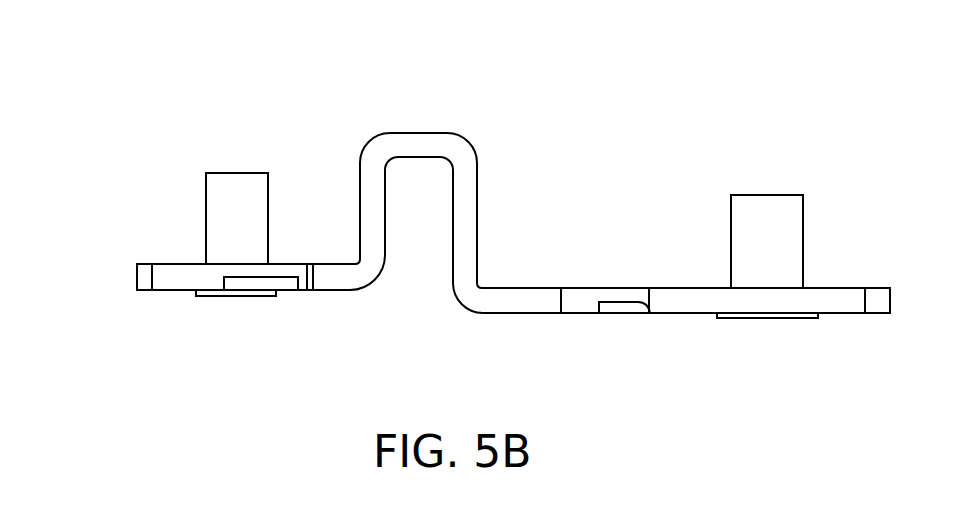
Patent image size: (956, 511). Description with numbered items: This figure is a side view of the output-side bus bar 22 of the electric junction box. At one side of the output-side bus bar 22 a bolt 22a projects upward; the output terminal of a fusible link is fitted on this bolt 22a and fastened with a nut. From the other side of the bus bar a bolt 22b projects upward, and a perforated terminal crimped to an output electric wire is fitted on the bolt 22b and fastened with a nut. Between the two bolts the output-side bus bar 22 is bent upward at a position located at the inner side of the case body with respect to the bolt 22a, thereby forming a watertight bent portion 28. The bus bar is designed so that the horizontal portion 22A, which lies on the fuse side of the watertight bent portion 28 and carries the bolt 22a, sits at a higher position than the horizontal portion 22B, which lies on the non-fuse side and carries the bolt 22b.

The output-side bus bar 22 is at (160, 258).
The horizontal portion 22A is at (343, 290).
The horizontal portion 22B is at (678, 315).
The bolt 22a is at (230, 173).
The bolt 22b is at (762, 203).
The watertight bent portion 28 is at (416, 138).